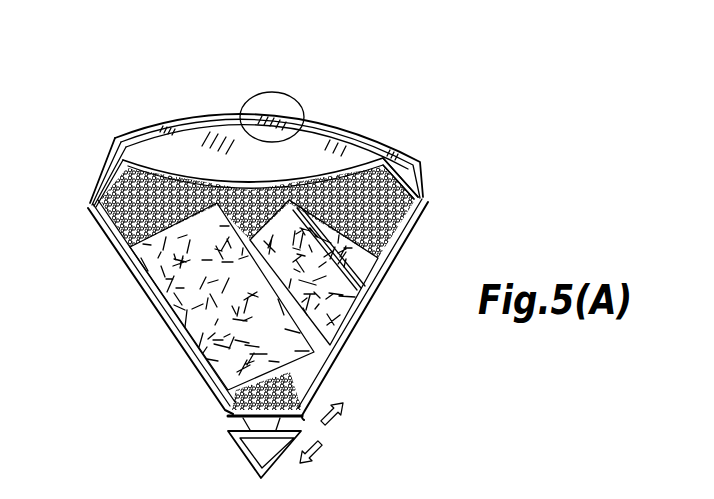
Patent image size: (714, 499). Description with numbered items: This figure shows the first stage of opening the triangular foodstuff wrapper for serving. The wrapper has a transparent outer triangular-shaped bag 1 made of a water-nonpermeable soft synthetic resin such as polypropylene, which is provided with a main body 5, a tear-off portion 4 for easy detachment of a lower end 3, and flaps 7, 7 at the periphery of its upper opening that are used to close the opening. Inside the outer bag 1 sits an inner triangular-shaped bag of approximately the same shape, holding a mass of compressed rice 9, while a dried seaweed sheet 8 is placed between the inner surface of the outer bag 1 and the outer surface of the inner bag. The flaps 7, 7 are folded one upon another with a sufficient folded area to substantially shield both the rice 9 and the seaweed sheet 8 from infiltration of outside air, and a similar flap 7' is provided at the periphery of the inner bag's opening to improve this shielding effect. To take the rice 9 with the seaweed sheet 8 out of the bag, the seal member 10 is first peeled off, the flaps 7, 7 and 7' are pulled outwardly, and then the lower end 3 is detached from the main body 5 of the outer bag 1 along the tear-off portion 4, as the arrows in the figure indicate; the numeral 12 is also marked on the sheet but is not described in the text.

The outer triangular-shaped bag 1 is at (162, 327).
The lower end 3 is at (260, 447).
The tear-off portion 4 is at (247, 430).
The main body 5 is at (373, 231).
The flap 7 is at (395, 154).
The flap 7' is at (269, 135).
The dried seaweed sheet 8 is at (340, 297).
The mass of compressed rice 9 is at (97, 203).
The seal member 10 is at (286, 110).
The container body 12 is at (381, 493).